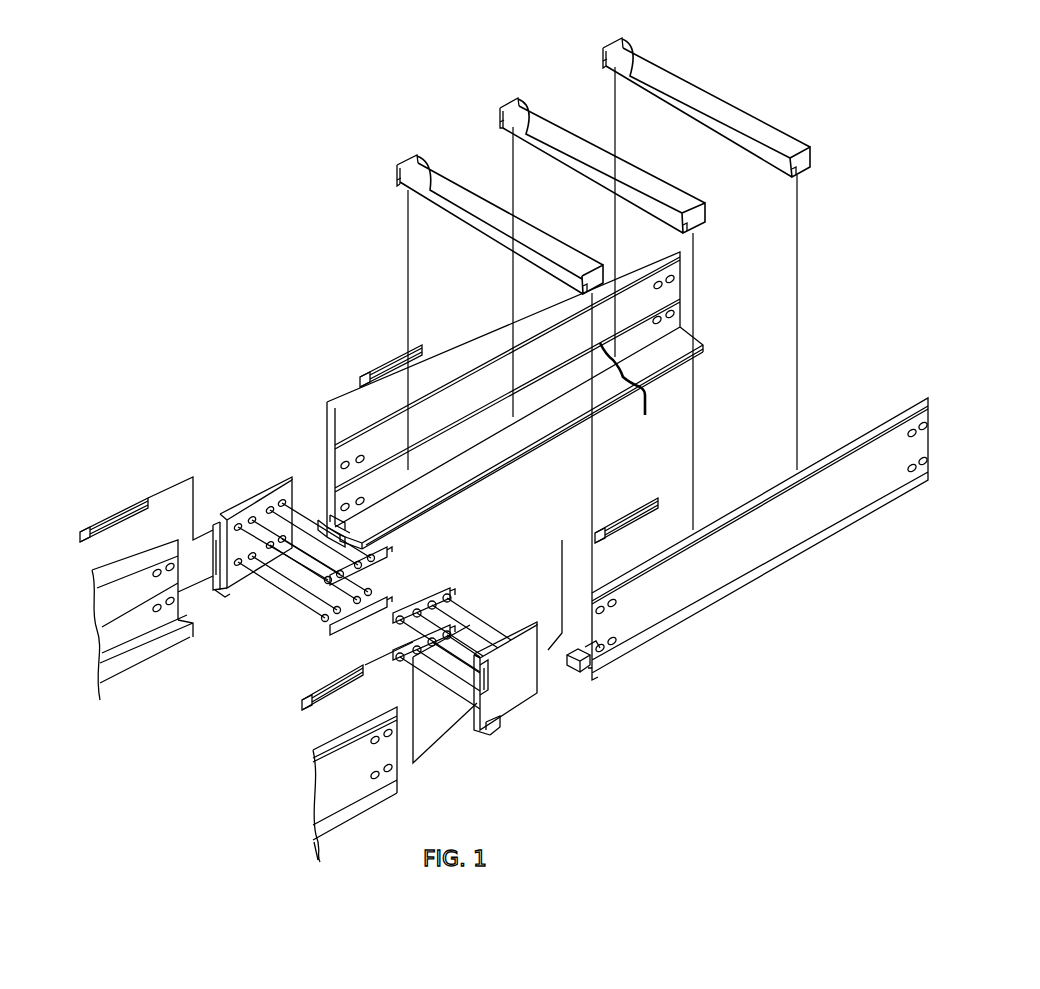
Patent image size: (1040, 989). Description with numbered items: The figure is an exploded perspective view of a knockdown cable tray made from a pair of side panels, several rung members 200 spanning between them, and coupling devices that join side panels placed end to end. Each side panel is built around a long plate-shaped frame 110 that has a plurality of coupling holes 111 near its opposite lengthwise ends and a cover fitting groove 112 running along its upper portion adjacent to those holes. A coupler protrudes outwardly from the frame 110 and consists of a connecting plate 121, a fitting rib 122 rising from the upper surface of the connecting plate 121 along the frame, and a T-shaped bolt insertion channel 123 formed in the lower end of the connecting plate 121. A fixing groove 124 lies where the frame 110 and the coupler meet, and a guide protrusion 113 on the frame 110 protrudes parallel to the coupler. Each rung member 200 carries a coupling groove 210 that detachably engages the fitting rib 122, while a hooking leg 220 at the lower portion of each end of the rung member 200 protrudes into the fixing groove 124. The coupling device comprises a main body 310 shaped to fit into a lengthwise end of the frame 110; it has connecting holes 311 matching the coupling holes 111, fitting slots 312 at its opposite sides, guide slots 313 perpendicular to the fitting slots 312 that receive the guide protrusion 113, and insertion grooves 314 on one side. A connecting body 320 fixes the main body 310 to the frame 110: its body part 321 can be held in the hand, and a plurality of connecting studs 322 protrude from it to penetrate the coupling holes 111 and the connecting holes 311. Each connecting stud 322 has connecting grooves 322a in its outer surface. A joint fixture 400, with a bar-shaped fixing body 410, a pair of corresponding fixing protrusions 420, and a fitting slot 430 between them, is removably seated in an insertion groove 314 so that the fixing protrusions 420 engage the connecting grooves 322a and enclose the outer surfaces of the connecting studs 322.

The frame 110 is at (860, 500).
The coupling holes 111 is at (347, 460).
The cover fitting groove 112 is at (330, 402).
The guide protrusion 113 is at (636, 398).
The connecting plate 121 is at (692, 346).
The fitting rib 122 is at (701, 342).
The T-shaped bolt insertion channel 123 is at (335, 535).
The fixing groove 124 is at (328, 520).
The rung member 200 is at (430, 170).
The coupling groove 210 is at (398, 182).
The hooking leg 220 is at (396, 165).
The main body 310 is at (265, 492).
The connecting holes 311 is at (255, 512).
The fitting slots 312 is at (216, 562).
The guide slots 313 is at (228, 572).
The insertion grooves 314 is at (220, 596).
The connecting body 320 is at (398, 603).
The body part 321 is at (335, 585).
The connecting studs 322 is at (338, 632).
The connecting grooves 322a is at (390, 550).
The joint fixture 400 is at (342, 571).
The fixing body 410 is at (82, 530).
The fixing protrusions 420 is at (141, 500).
The fitting slot 430 is at (112, 505).